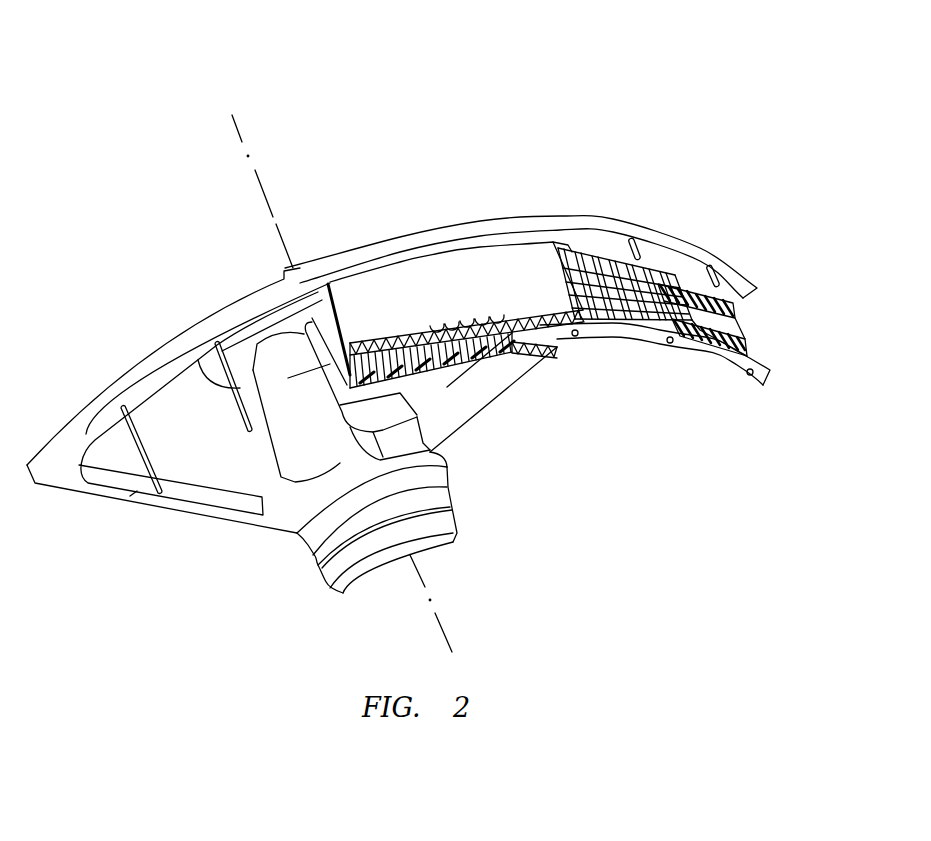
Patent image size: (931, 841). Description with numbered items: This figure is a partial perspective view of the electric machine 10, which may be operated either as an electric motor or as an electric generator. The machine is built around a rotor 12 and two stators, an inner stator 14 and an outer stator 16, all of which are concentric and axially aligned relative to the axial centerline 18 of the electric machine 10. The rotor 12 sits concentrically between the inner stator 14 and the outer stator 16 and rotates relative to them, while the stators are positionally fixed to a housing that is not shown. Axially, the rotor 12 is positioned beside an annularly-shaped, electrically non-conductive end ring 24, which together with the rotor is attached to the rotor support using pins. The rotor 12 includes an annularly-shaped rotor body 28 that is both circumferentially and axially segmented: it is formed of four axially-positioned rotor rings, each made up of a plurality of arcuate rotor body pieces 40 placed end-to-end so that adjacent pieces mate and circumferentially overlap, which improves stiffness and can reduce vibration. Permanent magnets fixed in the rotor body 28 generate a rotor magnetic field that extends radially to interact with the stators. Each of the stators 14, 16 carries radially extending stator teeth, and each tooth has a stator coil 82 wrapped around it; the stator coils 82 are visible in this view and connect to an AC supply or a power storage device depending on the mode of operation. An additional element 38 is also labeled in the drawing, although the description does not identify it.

The electric machine 10 is at (160, 80).
The rotor 12 is at (607, 332).
The inner stator 14 is at (564, 350).
The outer stator 16 is at (523, 262).
The axial centerline 18 is at (250, 160).
The end ring 24 is at (147, 437).
The rotor body 28 is at (640, 332).
The end turns 38 is at (738, 314).
The rotor body pieces 40 is at (700, 333).
The stator coils 82 is at (453, 358).